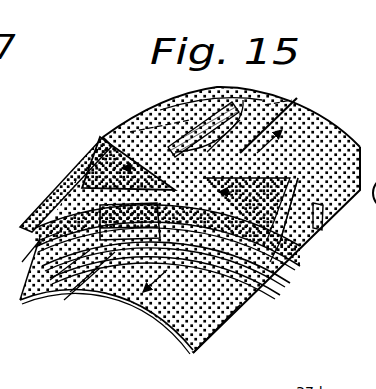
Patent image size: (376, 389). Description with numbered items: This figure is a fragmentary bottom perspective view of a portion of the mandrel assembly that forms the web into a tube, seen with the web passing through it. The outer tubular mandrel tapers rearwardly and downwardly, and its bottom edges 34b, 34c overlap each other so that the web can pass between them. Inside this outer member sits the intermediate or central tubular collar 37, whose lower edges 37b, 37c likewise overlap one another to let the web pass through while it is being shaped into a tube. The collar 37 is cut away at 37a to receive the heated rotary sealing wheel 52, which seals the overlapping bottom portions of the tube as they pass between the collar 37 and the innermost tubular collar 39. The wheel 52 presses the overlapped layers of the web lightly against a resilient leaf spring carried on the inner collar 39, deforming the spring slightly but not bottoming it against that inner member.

The heated rotary sealing wheel 52 is at (268, 92).
The bottom edge of outer tubular mandrel 34b is at (50, 196).
The bottom edge of outer tubular mandrel 34c is at (100, 225).
The lower edge of collar 37b is at (35, 248).
The cut away portion of collar 37a is at (313, 231).
The lower edge of collar 37c is at (298, 248).
The tubular collar 39 is at (247, 303).
The collar 37 is at (368, 150).